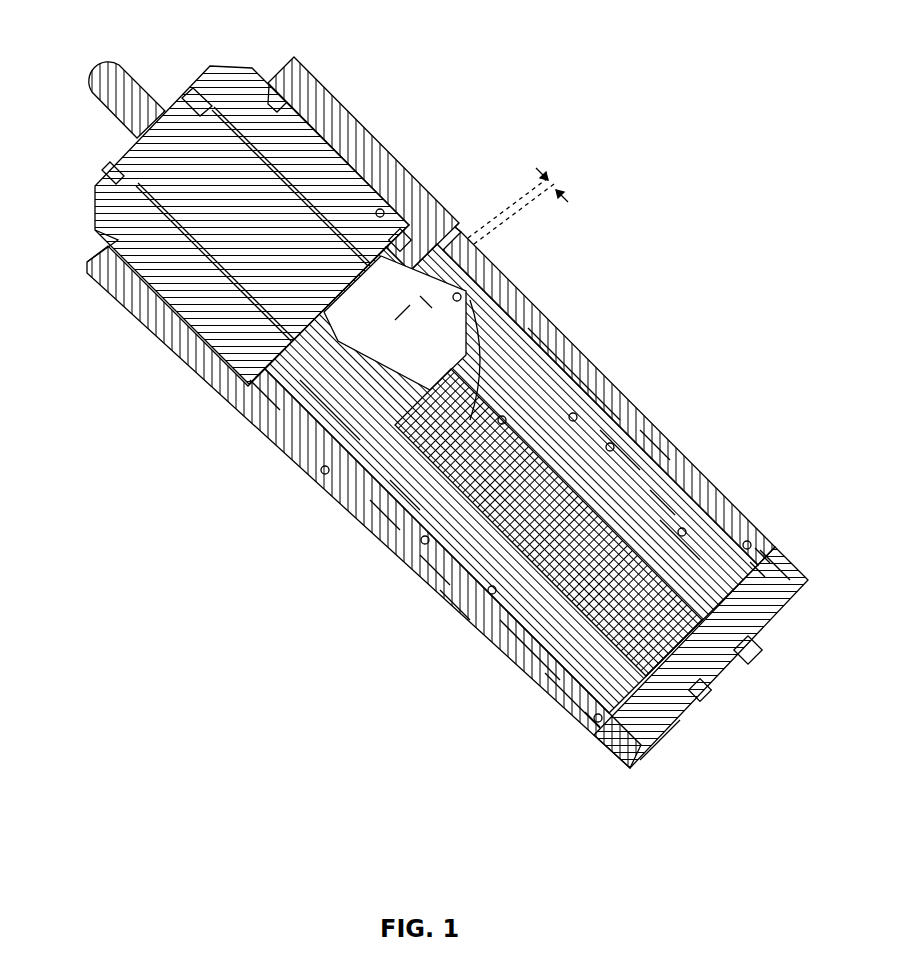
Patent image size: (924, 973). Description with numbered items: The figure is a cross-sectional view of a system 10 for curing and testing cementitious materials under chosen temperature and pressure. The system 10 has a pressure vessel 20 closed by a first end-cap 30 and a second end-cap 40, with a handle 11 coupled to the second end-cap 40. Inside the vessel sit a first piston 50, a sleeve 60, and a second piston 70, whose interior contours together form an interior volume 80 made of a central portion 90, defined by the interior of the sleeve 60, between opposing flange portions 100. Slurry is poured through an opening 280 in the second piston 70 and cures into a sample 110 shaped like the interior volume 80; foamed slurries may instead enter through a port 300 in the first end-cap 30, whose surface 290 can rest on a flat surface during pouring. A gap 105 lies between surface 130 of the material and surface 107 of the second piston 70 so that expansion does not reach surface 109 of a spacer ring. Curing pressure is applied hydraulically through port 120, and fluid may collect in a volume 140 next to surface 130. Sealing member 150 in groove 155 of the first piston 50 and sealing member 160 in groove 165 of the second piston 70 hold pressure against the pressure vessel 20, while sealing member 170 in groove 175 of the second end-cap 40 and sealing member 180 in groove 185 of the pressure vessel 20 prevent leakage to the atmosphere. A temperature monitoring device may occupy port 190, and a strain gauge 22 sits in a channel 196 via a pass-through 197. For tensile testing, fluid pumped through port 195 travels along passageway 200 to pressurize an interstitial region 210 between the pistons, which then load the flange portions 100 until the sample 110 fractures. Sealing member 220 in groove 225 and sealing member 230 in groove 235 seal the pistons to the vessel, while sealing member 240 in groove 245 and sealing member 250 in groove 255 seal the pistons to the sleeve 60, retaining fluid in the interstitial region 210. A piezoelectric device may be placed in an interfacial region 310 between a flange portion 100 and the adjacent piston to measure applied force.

The system 10 is at (714, 70).
The handle 11 is at (104, 58).
The pressure vessel 20 is at (763, 556).
The strain gauge 22 is at (395, 490).
The first end-cap 30 is at (797, 592).
The second end-cap 40 is at (275, 148).
The first piston 50 is at (747, 543).
The sleeve 60 is at (600, 400).
The second piston 70 is at (625, 445).
The interior volume 80 is at (680, 530).
The central portion 90 is at (618, 425).
The flange portions 100 is at (755, 655).
The gap 105 is at (552, 172).
The surface 107 is at (460, 232).
The surface 109 is at (400, 327).
The sample 110 is at (520, 635).
The port 120 is at (197, 92).
The surface 130 is at (318, 398).
The volume 140 is at (262, 398).
The sealing member 150 is at (767, 557).
The groove 155 is at (762, 560).
The sealing member 160 is at (492, 262).
The groove 165 is at (486, 283).
The sealing member 170 is at (400, 238).
The groove 175 is at (362, 205).
The sealing member 180 is at (590, 717).
The groove 185 is at (593, 722).
The port 190 is at (108, 168).
The port 195 is at (95, 263).
The channel 196 is at (380, 520).
The pass-through 197 is at (323, 473).
The passageway 200 is at (210, 357).
The interstitial region 210 is at (655, 440).
The sealing member 220 is at (453, 607).
The groove 225 is at (490, 595).
The sealing member 230 is at (427, 563).
The groove 235 is at (420, 540).
The sealing member 240 is at (673, 533).
The groove 245 is at (662, 497).
The sealing member 250 is at (582, 378).
The groove 255 is at (596, 362).
The opening 280 is at (425, 300).
The surface 290 is at (665, 742).
The port 300 is at (705, 672).
The interfacial region 310 is at (528, 328).